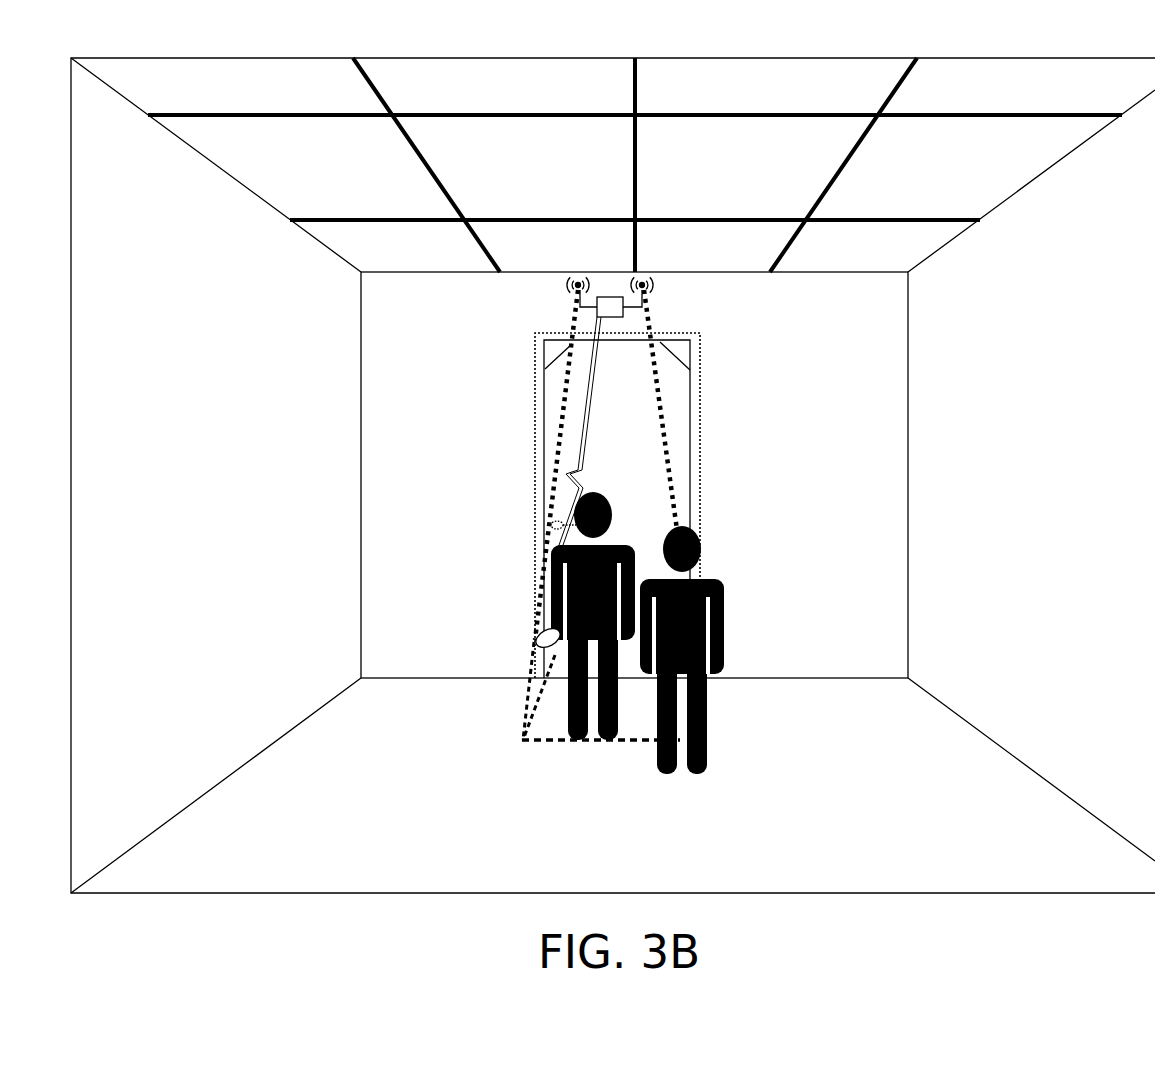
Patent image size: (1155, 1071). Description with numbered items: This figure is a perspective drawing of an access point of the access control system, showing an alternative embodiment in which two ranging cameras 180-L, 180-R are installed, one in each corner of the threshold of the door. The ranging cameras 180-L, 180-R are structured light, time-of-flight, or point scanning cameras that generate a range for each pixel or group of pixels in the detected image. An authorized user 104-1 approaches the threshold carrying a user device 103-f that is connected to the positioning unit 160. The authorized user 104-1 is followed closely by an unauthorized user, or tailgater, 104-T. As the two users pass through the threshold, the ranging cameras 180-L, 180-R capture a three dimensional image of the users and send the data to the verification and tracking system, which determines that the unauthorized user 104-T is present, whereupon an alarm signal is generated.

The positioning unit 160 is at (576, 299).
The ranging camera 180-L is at (574, 342).
The ranging camera 180-R is at (682, 352).
The user device 103-f is at (537, 645).
The authorized user 104-1 is at (567, 710).
The unauthorized user 104-T is at (662, 770).